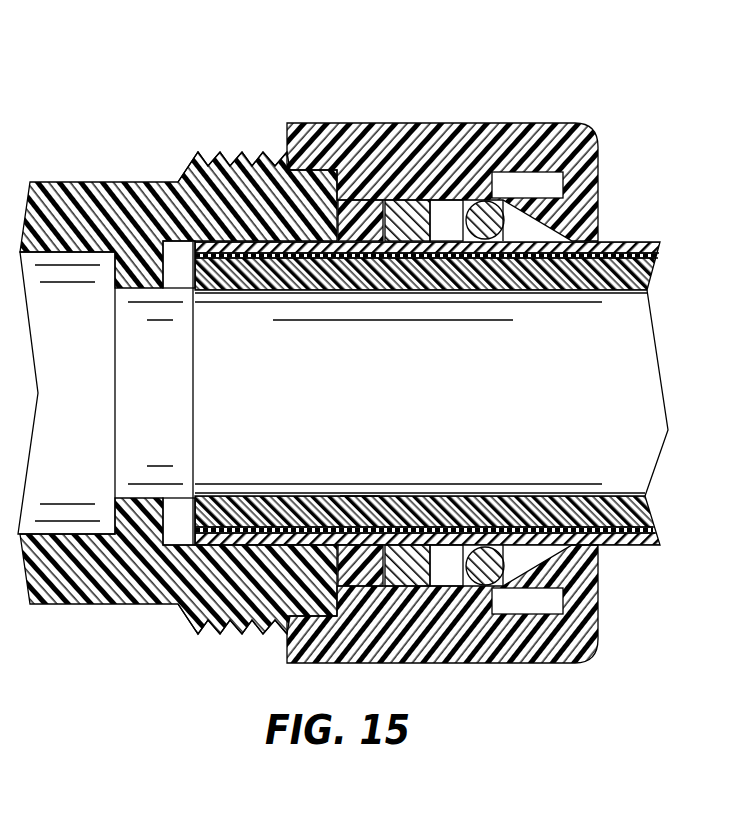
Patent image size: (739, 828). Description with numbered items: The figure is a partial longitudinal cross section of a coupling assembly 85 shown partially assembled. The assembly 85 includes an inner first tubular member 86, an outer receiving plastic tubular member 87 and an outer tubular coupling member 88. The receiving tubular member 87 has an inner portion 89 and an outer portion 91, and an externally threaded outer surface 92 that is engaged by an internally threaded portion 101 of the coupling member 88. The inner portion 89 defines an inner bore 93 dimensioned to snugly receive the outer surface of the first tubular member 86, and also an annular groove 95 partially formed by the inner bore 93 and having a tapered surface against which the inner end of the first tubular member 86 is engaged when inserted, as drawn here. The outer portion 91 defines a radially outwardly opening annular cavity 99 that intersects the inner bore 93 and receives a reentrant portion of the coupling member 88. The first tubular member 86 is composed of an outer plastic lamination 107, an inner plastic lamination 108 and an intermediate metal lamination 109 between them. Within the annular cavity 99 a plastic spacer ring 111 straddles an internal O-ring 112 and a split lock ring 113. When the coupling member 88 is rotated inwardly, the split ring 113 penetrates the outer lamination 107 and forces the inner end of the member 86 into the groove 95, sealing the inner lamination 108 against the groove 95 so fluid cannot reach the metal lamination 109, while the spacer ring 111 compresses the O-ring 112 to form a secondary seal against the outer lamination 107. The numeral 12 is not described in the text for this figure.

The coupling assembly 85 is at (267, 111).
The hose 12 is at (525, 492).
The first tubular member 86 is at (614, 492).
The receiving tubular member 87 is at (97, 605).
The tubular coupling member 88 is at (433, 122).
The inner portion 89 is at (112, 510).
The outer portion 91 is at (453, 585).
The externally threaded outer surface 92 is at (240, 632).
The inner bore 93 is at (173, 510).
The annular groove 95 is at (202, 512).
The annular cavity 99 is at (443, 562).
The internally threaded portion 101 is at (316, 150).
The outer plastic lamination 107 is at (634, 243).
The inner plastic lamination 108 is at (645, 284).
The intermediate metal lamination 109 is at (660, 256).
The spacer ring 111 is at (400, 496).
The O-ring 112 is at (357, 496).
The split lock ring 113 is at (535, 280).